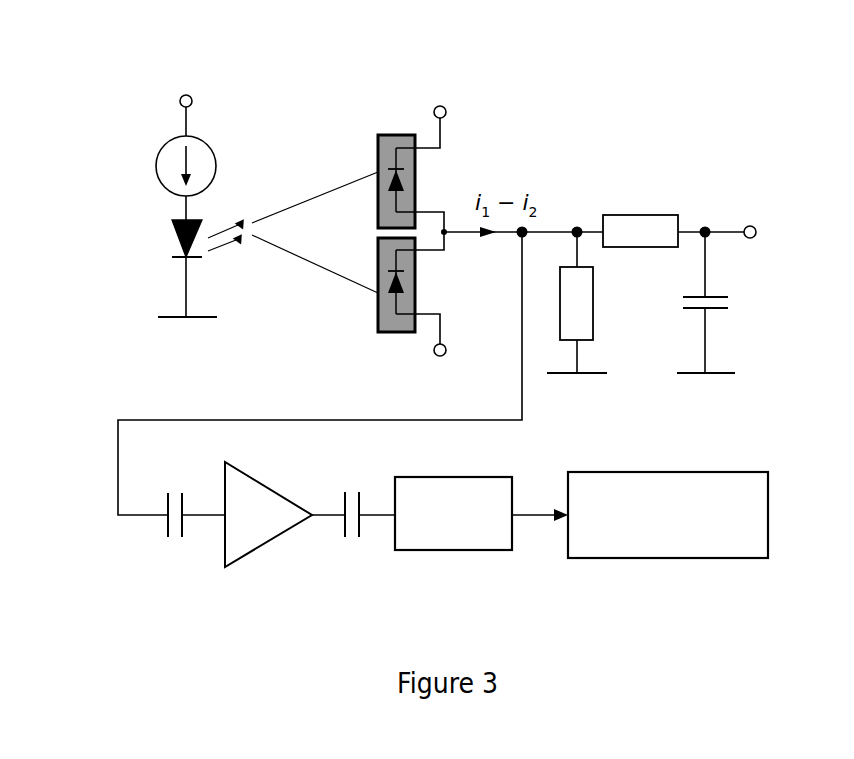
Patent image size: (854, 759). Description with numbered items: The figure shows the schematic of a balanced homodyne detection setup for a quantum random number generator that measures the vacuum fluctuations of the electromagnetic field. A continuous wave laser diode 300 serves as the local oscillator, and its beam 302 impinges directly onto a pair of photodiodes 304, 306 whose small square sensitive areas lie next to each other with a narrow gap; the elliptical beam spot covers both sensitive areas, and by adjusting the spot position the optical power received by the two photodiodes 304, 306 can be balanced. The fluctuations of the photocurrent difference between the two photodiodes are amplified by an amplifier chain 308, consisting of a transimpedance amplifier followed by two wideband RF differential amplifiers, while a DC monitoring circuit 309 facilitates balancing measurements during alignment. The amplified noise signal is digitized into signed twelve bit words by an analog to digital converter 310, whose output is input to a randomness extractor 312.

The laser diode 300 is at (230, 193).
The beam 302 is at (272, 247).
The photodiode 304 is at (390, 133).
The photodiode 306 is at (390, 334).
The amplifier chain 308 is at (332, 570).
The DC monitoring circuit 309 is at (773, 138).
The analog to digital converter 310 is at (470, 556).
The randomness extractor 312 is at (697, 560).